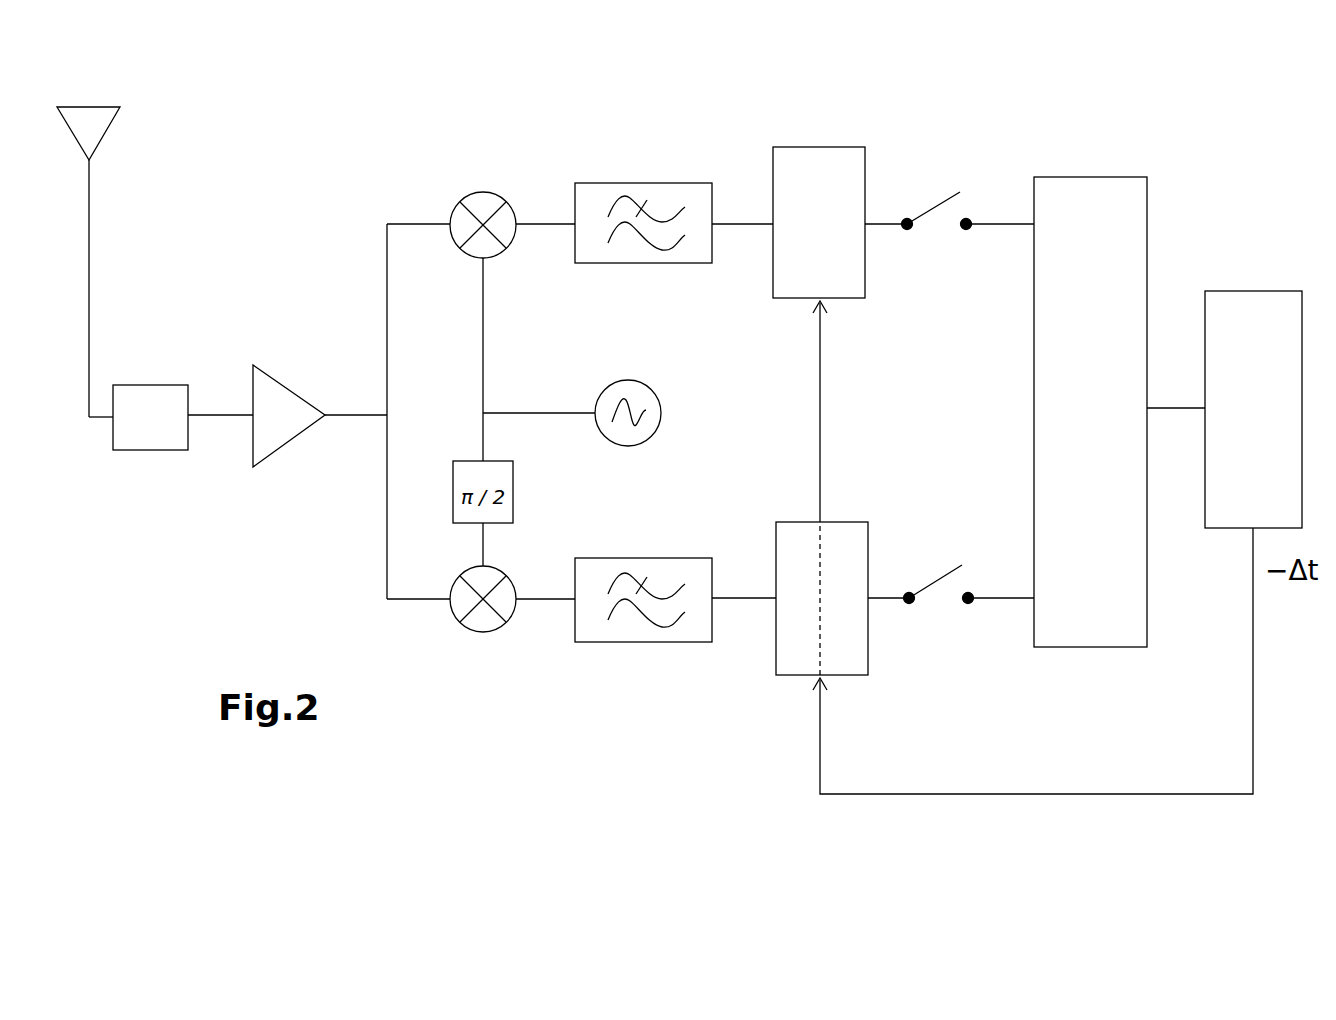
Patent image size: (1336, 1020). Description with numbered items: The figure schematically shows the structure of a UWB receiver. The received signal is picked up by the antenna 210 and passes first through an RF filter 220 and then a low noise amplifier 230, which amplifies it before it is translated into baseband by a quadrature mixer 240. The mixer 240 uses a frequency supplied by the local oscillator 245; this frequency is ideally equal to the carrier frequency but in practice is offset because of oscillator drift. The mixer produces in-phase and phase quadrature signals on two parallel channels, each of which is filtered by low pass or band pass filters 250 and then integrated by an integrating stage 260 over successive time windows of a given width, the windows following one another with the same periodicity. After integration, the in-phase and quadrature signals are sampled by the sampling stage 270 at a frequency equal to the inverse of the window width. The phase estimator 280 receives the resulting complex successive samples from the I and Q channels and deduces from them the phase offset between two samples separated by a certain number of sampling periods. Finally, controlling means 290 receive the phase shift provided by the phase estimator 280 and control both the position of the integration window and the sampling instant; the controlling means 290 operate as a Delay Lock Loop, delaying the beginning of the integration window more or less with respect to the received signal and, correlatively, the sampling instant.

The antenna 210 is at (105, 107).
The RF filter 220 is at (147, 385).
The low noise amplifier 230 is at (285, 385).
The quadrature mixer 240 is at (470, 192).
The local oscillator 245 is at (661, 398).
The low pass filters 250 is at (637, 183).
The integrating stage 260 is at (798, 147).
The sampling stage 270 is at (940, 207).
The phase estimator 280 is at (1078, 177).
The controlling means 290 is at (1238, 291).